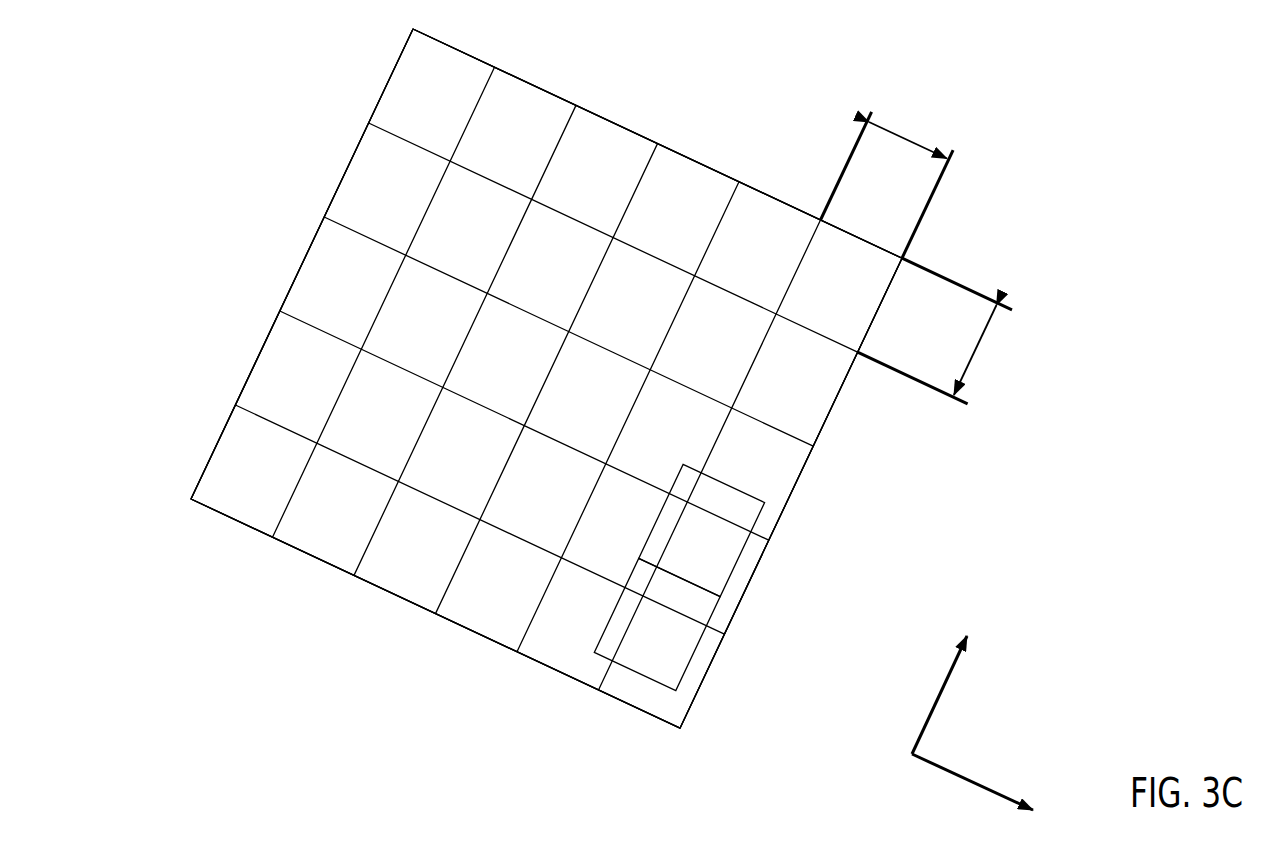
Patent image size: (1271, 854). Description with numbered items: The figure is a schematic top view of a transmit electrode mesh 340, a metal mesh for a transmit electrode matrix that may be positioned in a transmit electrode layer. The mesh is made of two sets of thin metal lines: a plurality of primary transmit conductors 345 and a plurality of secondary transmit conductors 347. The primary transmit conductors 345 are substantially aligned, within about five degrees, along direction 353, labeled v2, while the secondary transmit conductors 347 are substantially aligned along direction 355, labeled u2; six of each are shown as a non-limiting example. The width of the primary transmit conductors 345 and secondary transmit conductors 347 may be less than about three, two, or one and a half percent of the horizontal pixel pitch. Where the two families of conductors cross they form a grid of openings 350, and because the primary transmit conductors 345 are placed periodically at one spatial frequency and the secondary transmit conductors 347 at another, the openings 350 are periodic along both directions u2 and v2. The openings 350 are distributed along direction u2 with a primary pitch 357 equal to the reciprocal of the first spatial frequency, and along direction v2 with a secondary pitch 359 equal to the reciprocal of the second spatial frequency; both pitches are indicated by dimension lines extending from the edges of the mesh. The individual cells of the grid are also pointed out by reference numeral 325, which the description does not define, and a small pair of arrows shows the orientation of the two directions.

The transmit electrode mesh 340 is at (258, 88).
The openings 350 is at (644, 320).
The secondary transmit conductors 347 is at (396, 62).
The primary transmit conductors 345 is at (771, 195).
The pixels 325 is at (680, 497).
The secondary pitch 359 is at (858, 110).
The primary pitch 357 is at (948, 278).
The direction v2 353 is at (948, 668).
The direction u2 355 is at (958, 773).